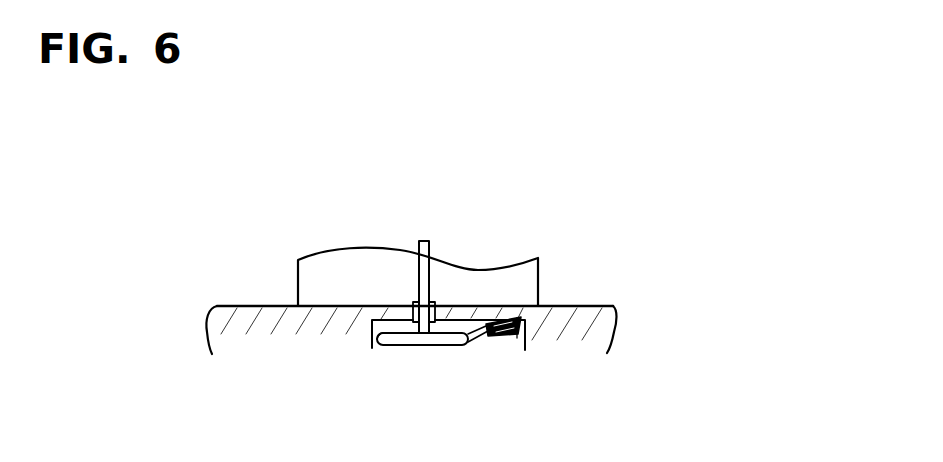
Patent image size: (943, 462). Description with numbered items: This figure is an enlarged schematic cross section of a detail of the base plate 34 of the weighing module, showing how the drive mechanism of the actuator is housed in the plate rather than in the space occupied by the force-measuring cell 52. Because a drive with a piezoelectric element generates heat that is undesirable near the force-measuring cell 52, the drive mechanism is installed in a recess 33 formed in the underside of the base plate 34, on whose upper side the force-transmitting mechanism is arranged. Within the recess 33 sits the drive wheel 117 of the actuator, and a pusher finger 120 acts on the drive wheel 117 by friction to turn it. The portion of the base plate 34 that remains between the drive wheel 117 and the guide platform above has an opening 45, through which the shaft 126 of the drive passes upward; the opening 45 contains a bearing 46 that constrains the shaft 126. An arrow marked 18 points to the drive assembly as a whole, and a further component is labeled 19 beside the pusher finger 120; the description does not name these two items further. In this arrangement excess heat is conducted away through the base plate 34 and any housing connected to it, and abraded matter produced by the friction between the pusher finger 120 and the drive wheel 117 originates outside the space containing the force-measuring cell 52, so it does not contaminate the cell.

The fastening assembly 18 is at (465, 360).
The spring element 19 is at (501, 339).
The recess 33 is at (391, 329).
The base plate 34 is at (233, 325).
The opening 45 is at (437, 297).
The bearing 46 is at (410, 305).
The force-measuring cell 52 is at (458, 273).
The drive wheel 117 is at (432, 341).
The pusher finger 120 is at (483, 339).
The shaft 126 is at (419, 273).